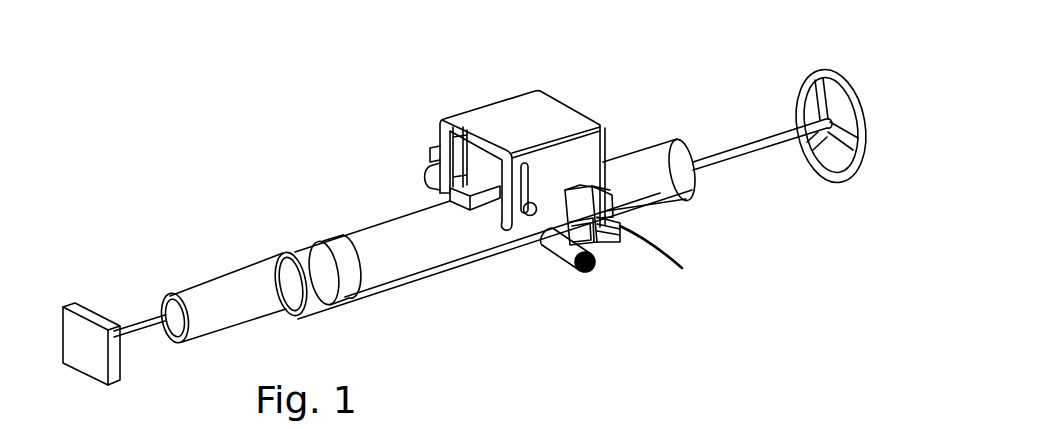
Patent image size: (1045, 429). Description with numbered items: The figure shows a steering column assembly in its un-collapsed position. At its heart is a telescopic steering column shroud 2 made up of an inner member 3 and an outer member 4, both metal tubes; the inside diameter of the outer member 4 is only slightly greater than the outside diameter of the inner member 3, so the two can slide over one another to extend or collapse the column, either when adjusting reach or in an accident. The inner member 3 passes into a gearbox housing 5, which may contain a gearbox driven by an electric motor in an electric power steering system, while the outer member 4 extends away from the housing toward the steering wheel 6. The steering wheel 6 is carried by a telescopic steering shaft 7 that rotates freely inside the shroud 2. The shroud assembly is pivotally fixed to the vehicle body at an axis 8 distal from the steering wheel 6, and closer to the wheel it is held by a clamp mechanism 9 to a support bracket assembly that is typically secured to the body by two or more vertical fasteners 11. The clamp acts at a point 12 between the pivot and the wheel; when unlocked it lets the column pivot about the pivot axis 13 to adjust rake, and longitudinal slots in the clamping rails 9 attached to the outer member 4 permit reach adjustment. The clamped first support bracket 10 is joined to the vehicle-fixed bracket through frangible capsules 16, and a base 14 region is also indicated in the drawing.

The telescopic steering column shroud 2 is at (658, 156).
The inner member 3 is at (208, 290).
The outer member 4 is at (387, 232).
The gearbox housing 5 is at (90, 310).
The steering wheel 6 is at (846, 80).
The telescopic steering shaft 7 is at (760, 148).
The axis 8 is at (332, 238).
The clamp mechanism 9 is at (481, 188).
The first support bracket 10 is at (565, 122).
The vertical fasteners 11 is at (612, 190).
The point 12 is at (540, 226).
The pivot axis 13 is at (523, 217).
The base slab 14 is at (503, 198).
The frangible capsules 16 is at (605, 250).